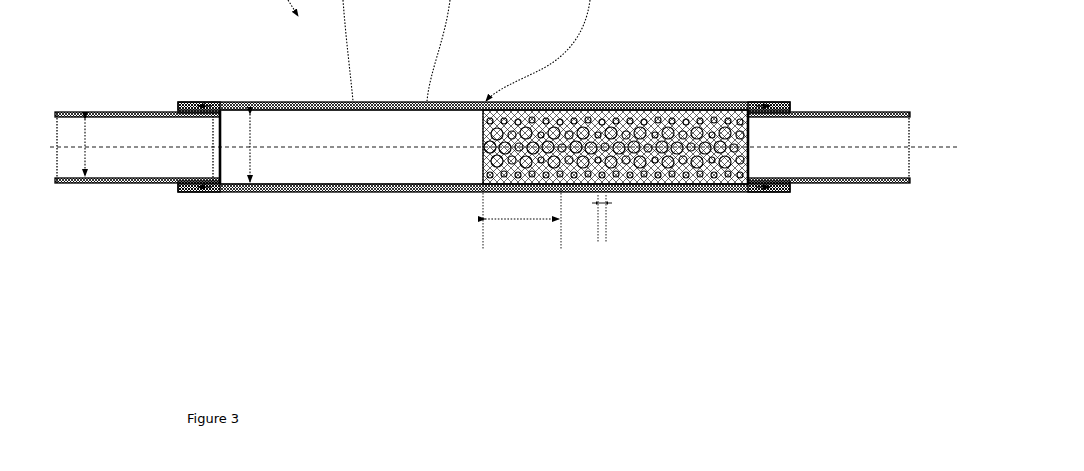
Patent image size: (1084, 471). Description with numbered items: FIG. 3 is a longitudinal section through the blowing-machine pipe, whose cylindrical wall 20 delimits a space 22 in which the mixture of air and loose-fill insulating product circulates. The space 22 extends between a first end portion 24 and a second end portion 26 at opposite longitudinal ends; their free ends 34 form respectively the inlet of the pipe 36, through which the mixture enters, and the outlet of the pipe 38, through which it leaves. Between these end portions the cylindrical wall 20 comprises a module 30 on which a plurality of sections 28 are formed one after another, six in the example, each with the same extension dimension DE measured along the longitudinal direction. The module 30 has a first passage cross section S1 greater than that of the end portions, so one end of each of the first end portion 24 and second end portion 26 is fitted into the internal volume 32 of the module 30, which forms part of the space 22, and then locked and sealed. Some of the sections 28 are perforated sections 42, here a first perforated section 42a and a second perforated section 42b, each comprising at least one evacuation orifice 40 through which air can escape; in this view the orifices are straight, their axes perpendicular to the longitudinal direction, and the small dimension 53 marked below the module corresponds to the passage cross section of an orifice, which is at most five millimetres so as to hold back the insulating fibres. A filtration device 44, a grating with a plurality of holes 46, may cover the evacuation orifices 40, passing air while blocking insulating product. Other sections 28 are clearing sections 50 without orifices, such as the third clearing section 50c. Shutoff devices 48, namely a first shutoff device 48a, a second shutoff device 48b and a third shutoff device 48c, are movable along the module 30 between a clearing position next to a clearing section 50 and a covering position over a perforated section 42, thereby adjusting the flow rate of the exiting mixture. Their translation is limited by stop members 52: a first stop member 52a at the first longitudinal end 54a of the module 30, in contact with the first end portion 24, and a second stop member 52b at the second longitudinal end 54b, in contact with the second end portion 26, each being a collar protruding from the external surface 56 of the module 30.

The cylindrical wall 20 is at (157, 110).
The space 22 is at (297, 137).
The first end portion 24 is at (135, 185).
The second end portion 26 is at (820, 185).
The sections 28 is at (540, 101).
The module 30 is at (383, 193).
The internal volume 32 is at (375, 132).
The free ends 34 is at (494, 164).
The inlet of the pipe 36 is at (60, 187).
The outlet of the pipe 38 is at (910, 112).
The evacuation orifice 40 is at (610, 101).
The perforated sections 42 is at (615, 97).
The first perforated section 42a is at (683, 101).
The second perforated section 42b is at (587, 101).
The filtration device 44 is at (683, 193).
The holes 46 is at (665, 196).
The shutoff device 48 is at (347, 95).
The first shutoff device 48a is at (455, 101).
The second shutoff device 48b is at (357, 101).
The third shutoff device 48c is at (272, 101).
The clearing sections 50 is at (232, 196).
The third clearing section 50c is at (267, 190).
The stop members 52 is at (80, 112).
The first stop member 52a is at (205, 102).
The second stop member 52b is at (755, 102).
The gap width 53 is at (603, 200).
The first longitudinal end 54a is at (198, 213).
The second longitudinal end 54b is at (753, 202).
The external surface 56 is at (472, 196).
The first passage cross section S1 is at (250, 150).
The extension dimension DE is at (522, 223).